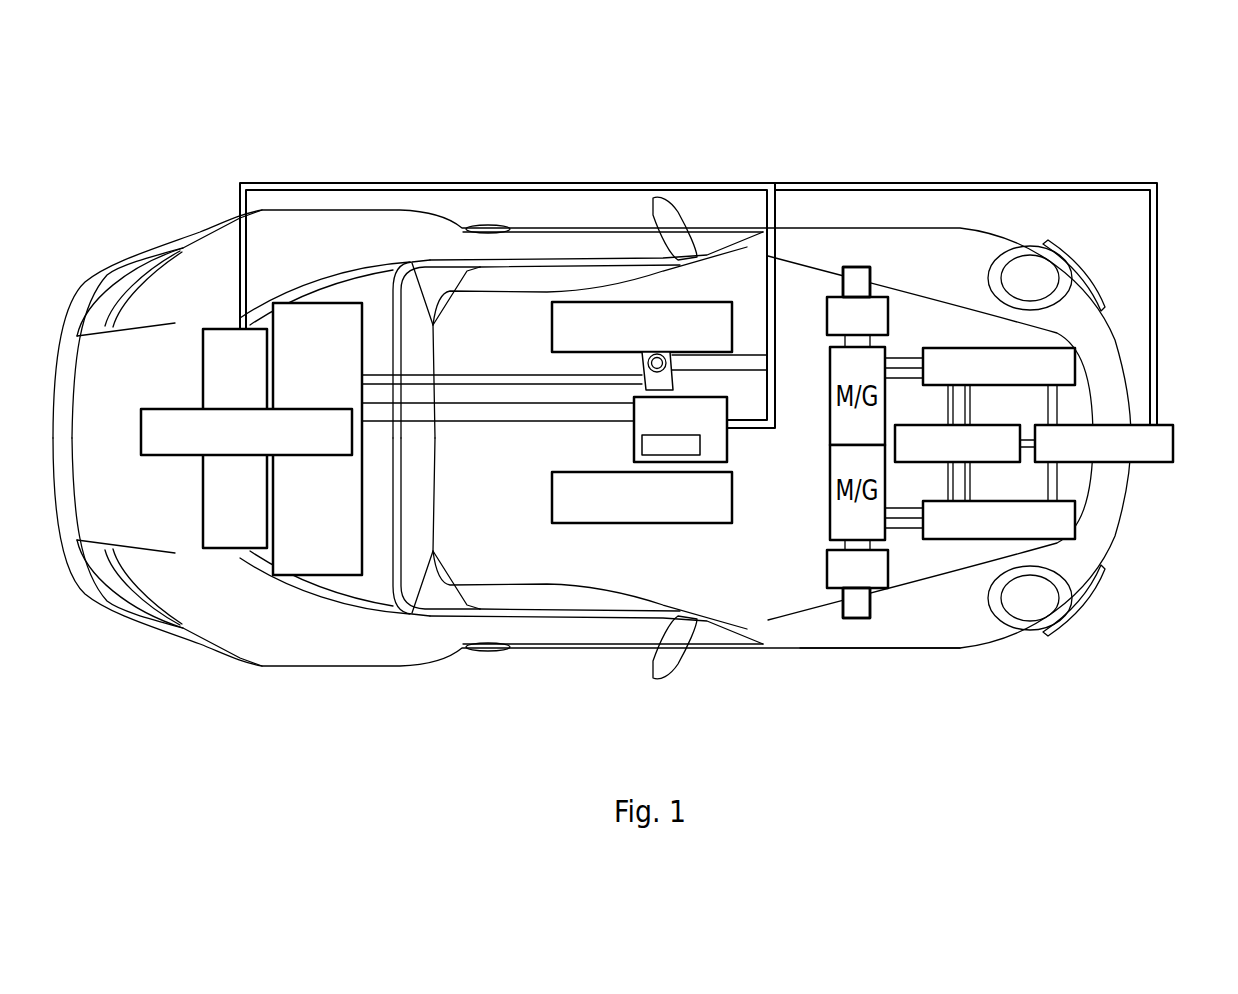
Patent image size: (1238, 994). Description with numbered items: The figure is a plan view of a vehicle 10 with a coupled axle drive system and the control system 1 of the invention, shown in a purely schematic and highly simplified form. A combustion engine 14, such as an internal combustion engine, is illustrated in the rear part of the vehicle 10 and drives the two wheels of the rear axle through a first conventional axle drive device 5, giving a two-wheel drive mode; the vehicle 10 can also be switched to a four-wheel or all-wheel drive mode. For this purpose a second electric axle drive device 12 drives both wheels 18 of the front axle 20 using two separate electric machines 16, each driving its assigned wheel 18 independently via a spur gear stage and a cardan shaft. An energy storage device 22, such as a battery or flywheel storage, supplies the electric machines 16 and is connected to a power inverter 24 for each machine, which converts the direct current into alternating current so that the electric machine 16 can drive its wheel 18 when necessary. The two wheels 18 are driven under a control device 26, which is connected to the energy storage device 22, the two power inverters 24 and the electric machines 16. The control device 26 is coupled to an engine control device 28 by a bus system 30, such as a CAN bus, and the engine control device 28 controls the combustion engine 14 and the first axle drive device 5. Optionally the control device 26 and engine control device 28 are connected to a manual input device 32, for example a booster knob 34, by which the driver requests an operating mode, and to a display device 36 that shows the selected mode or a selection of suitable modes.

The control system 1 is at (1022, 215).
The first axle drive device 5 is at (240, 508).
The vehicle 10 is at (932, 657).
The second electric axle drive device 12 is at (845, 627).
The combustion engine 14 is at (307, 530).
The electric machine 16 is at (873, 312).
The wheel 18 is at (848, 265).
The front axle 20 is at (858, 279).
The energy storage device 22 is at (1012, 430).
The power inverter 24 is at (1063, 355).
The control device 26 is at (1168, 428).
The engine control device 28 is at (157, 423).
The bus system 30 is at (348, 183).
The manual input device 32 is at (602, 292).
The booster knob 34 is at (563, 313).
The display device 36 is at (572, 509).